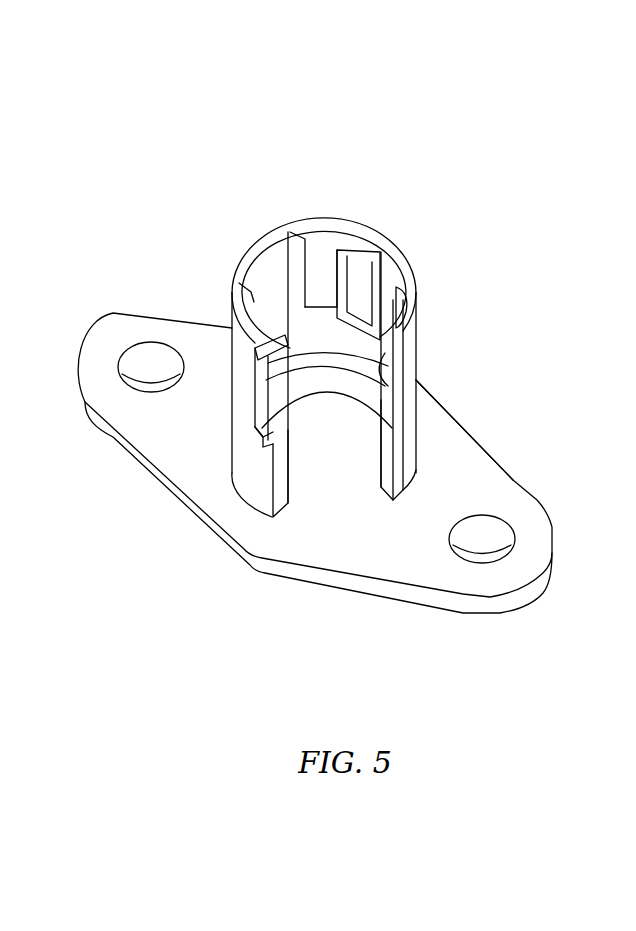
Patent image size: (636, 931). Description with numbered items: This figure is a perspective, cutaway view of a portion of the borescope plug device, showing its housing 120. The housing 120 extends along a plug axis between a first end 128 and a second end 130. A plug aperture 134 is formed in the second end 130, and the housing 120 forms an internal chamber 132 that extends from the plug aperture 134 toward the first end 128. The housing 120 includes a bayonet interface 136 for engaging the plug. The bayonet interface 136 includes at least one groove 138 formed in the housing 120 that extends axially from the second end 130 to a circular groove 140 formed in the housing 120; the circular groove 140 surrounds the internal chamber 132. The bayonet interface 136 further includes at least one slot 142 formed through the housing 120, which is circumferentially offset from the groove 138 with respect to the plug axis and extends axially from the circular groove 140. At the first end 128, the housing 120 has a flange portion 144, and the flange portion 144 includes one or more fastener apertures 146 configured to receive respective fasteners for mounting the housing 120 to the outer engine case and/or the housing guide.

The housing 120 is at (418, 119).
The first end 128 is at (389, 611).
The second end 130 is at (402, 229).
The internal chamber 132 is at (335, 445).
The plug aperture 134 is at (323, 229).
The bayonet interface 136 is at (307, 229).
The groove 138 is at (265, 238).
The circular groove 140 is at (390, 381).
The slot 142 is at (362, 289).
The flange portion 144 is at (493, 474).
The fastener apertures 146 is at (150, 368).